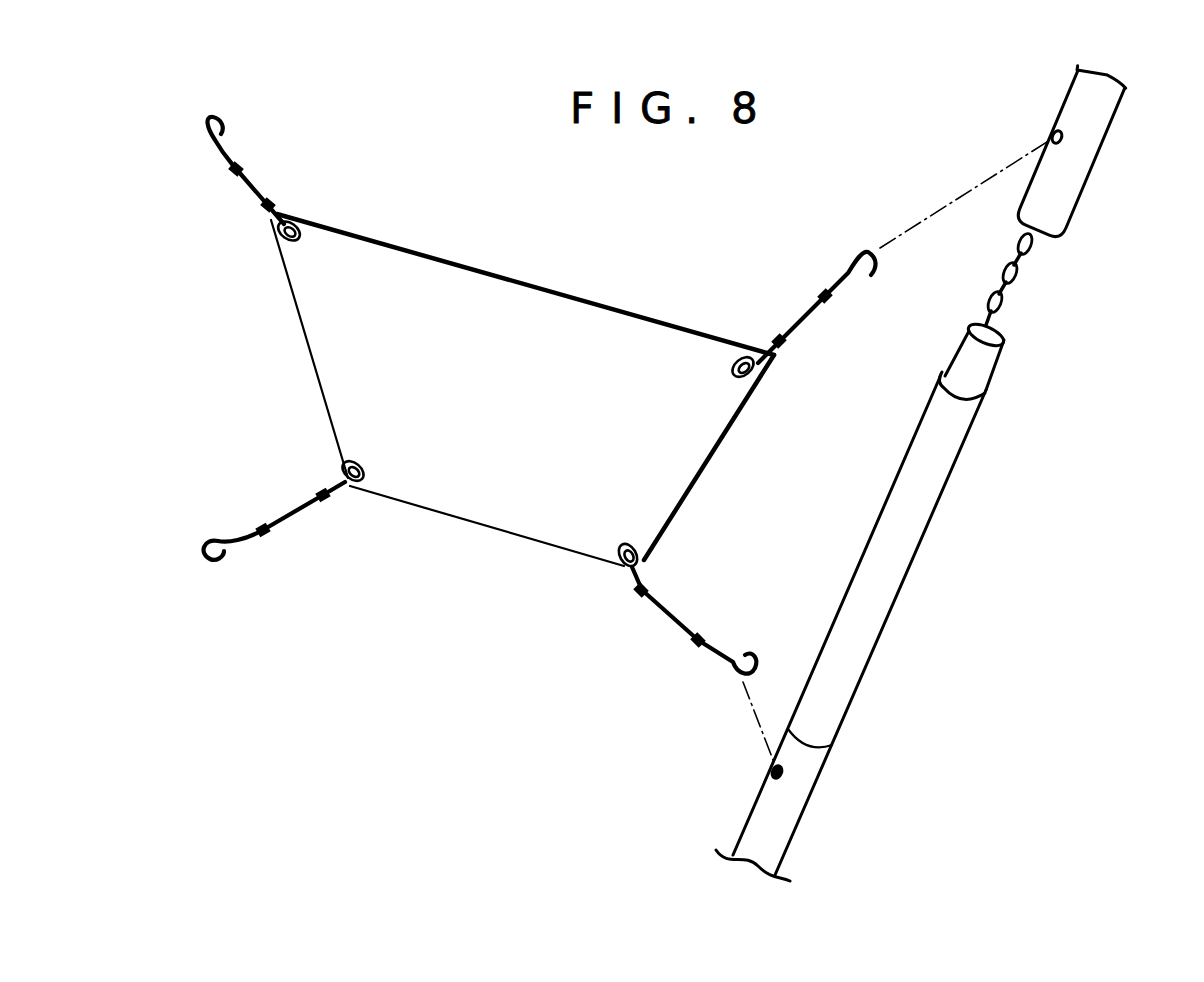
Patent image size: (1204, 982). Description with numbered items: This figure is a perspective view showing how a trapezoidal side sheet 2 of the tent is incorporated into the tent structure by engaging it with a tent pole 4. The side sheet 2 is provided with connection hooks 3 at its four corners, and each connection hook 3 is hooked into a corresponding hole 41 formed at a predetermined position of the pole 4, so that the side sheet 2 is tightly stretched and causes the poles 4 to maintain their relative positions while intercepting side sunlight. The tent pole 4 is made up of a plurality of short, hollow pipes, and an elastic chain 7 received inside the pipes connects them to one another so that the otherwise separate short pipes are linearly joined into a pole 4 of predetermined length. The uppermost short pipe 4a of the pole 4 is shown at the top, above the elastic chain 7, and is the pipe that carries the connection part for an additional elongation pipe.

The side sheet 2 is at (505, 498).
The connection hook 3 is at (872, 272).
The tent pole 4 is at (898, 605).
The uppermost short pipe 4a is at (1094, 137).
The elastic chain 7 is at (1018, 282).
The hole 41 is at (1052, 130).